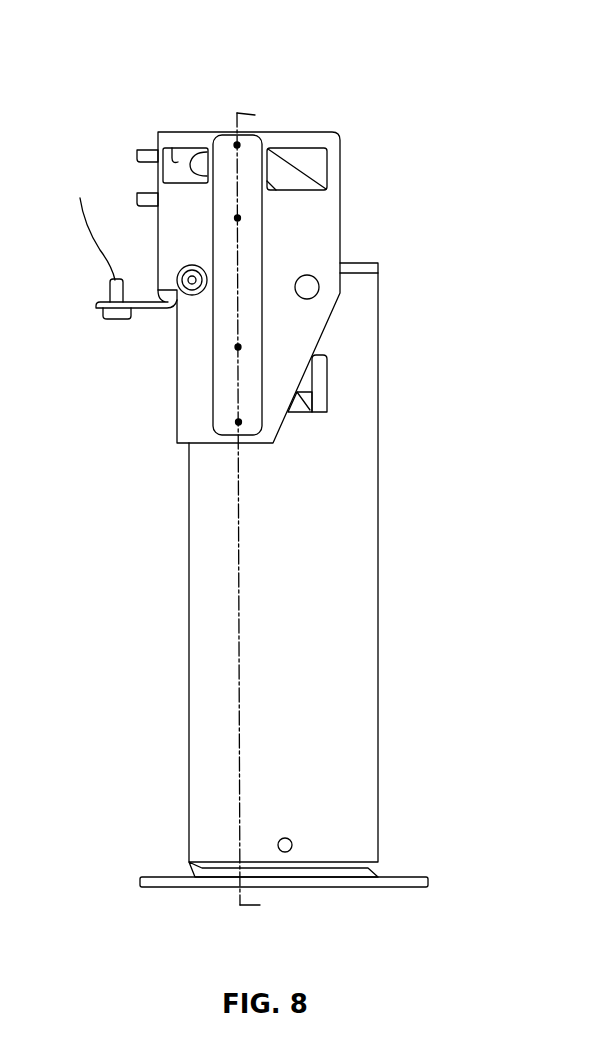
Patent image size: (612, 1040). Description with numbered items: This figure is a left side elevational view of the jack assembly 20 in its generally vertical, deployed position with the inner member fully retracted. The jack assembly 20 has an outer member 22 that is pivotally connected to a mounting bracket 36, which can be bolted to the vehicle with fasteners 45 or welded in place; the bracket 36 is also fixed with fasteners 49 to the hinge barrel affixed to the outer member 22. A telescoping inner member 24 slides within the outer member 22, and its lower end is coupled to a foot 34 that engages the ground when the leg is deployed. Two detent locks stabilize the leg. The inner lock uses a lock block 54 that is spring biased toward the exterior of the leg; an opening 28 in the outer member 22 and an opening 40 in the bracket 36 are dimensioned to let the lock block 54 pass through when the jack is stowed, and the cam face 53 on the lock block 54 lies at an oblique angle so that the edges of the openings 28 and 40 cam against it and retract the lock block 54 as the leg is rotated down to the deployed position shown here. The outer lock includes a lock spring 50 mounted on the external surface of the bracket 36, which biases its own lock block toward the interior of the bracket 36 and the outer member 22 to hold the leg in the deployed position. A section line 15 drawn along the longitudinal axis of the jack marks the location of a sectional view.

The jack assembly 20 is at (128, 90).
The section line 15 is at (247, 511).
The outer member 22 is at (355, 497).
The inner member 24 is at (368, 868).
The opening 28 is at (295, 413).
The foot 34 is at (163, 880).
The mounting bracket 36 is at (100, 303).
The opening 40 is at (313, 162).
The fasteners 45 is at (137, 152).
The fasteners 49 is at (190, 295).
The lock spring 50 is at (220, 397).
The cam face 53 is at (308, 405).
The lock block 54 is at (330, 345).